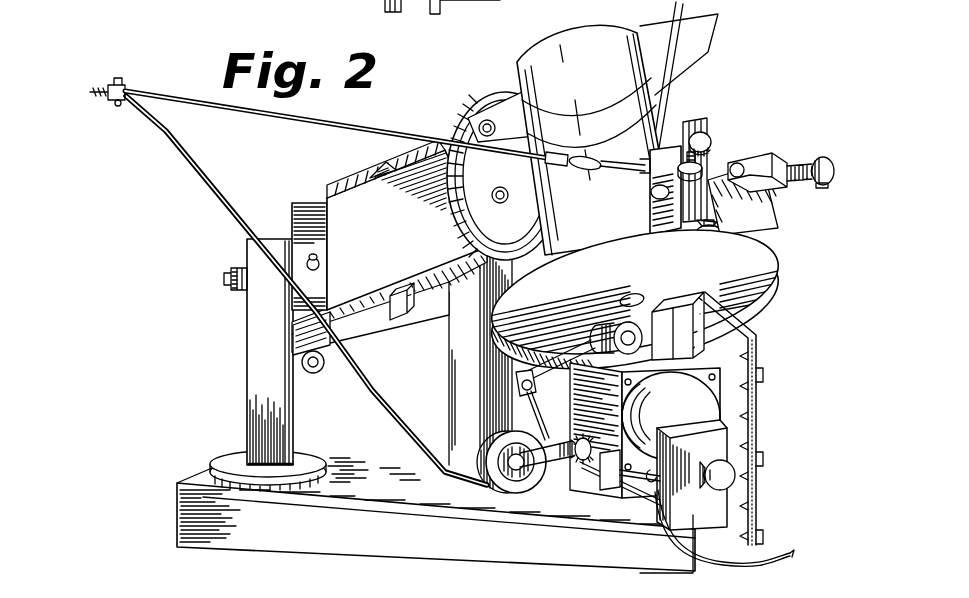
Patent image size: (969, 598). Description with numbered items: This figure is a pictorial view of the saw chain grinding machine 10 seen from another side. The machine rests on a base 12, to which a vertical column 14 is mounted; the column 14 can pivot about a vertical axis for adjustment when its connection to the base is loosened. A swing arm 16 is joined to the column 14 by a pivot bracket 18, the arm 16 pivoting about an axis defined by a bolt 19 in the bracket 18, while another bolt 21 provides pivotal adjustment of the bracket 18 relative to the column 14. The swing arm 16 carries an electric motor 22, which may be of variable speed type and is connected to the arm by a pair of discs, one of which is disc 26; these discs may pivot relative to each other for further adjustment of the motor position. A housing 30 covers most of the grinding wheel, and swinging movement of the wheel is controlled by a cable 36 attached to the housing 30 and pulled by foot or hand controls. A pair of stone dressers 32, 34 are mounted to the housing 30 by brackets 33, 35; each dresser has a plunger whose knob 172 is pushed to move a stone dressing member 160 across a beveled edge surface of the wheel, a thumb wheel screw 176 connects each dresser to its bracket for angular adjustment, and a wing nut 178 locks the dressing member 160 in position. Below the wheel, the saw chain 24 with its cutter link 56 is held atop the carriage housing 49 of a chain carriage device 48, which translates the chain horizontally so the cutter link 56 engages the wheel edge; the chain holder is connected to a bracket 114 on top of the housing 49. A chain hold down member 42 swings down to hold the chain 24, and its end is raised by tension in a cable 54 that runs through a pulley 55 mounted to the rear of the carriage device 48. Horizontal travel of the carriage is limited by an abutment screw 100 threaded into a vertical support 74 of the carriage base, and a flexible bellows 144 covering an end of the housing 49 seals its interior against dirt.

The saw chain grinding machine 10 is at (178, 347).
The base 12 is at (177, 519).
The vertical column 14 is at (260, 392).
The swing arm 16 is at (372, 200).
The pivot bracket 18 is at (305, 230).
The bolt 19 is at (302, 200).
The bolt 21 is at (229, 278).
The electric motor 22 is at (690, 62).
The saw chain 24 is at (758, 386).
The disc 26 is at (480, 103).
The housing 30 is at (770, 272).
The stone dresser 32 is at (795, 156).
The bracket 33 is at (790, 128).
The stone dresser 34 is at (710, 190).
The bracket 35 is at (655, 213).
The cable 36 is at (373, 170).
The chain hold down member 42 is at (553, 368).
The chain carriage device 48 is at (606, 492).
The carriage housing 49 is at (572, 418).
The cable 54 is at (206, 196).
The pulley 55 is at (499, 484).
The cutter link 56 is at (403, 7).
The vertical support 74 is at (713, 508).
The abutment screw 100 is at (728, 476).
The bracket 114 is at (700, 330).
The flexible bellows 144 is at (700, 405).
The stone dressing member 160 is at (690, 125).
The knob 172 is at (823, 188).
The thumb wheel screw 176 is at (673, 122).
The wing nut 178 is at (724, 160).